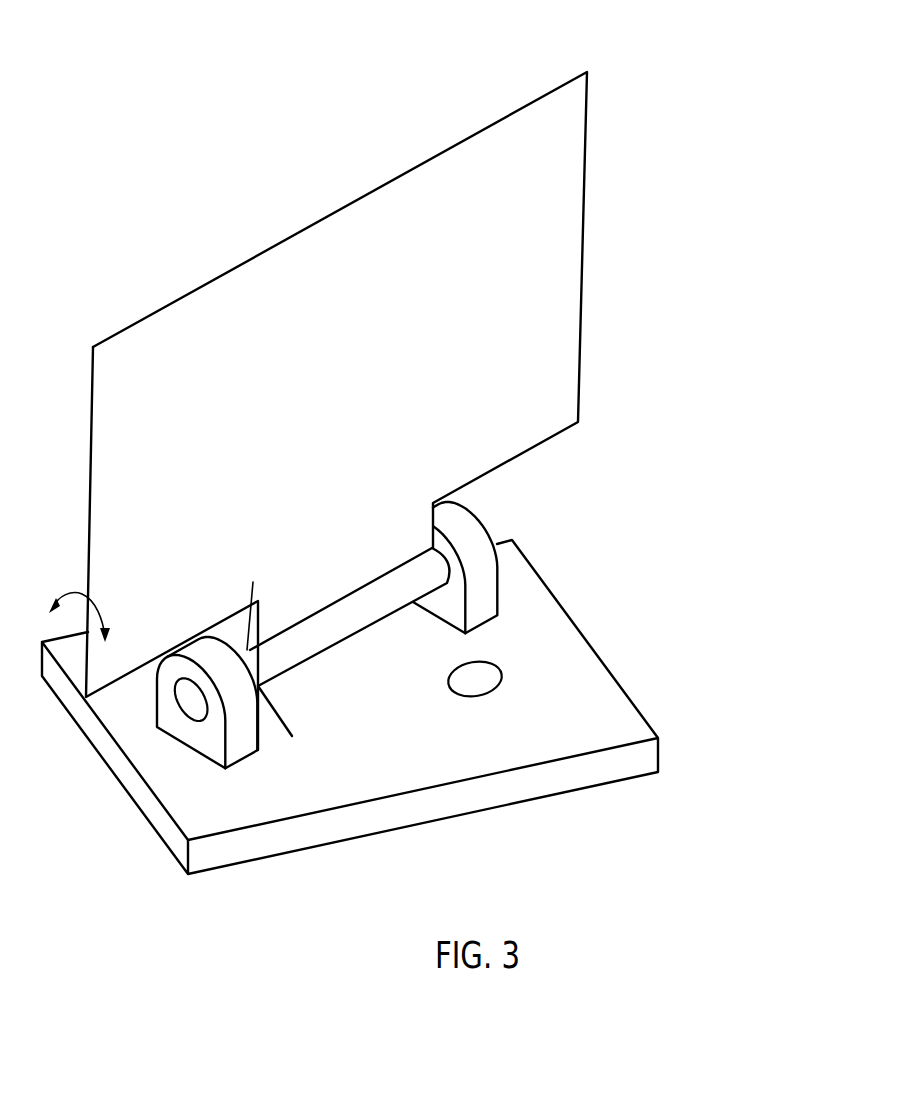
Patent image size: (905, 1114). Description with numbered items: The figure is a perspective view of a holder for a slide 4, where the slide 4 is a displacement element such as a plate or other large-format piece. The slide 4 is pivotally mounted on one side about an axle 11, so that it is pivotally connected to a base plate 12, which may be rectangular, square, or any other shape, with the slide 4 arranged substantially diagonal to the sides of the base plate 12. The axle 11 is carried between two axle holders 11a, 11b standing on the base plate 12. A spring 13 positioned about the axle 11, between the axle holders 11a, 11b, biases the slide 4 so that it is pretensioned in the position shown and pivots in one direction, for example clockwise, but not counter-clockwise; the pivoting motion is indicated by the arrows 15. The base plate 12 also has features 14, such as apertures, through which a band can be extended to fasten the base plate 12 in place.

The slide 4 is at (133, 322).
The axle 11 is at (183, 700).
The axle holder 11a is at (207, 725).
The axle holder 11b is at (498, 567).
The base plate 12 is at (175, 831).
The spring 13 is at (275, 713).
The features 14 is at (482, 673).
The pivoting direction 15 is at (68, 592).